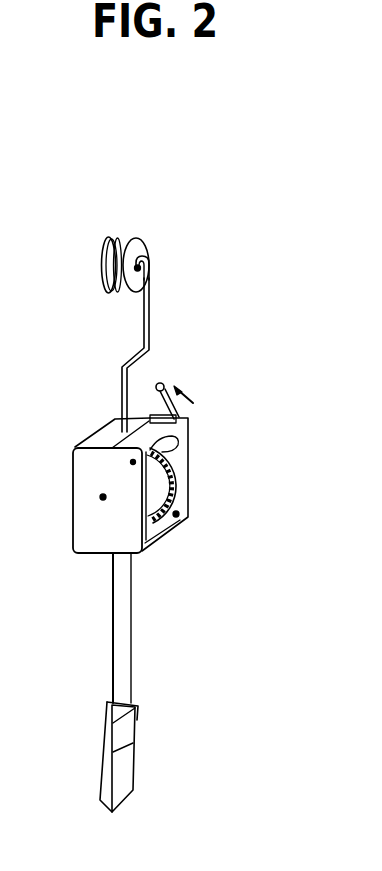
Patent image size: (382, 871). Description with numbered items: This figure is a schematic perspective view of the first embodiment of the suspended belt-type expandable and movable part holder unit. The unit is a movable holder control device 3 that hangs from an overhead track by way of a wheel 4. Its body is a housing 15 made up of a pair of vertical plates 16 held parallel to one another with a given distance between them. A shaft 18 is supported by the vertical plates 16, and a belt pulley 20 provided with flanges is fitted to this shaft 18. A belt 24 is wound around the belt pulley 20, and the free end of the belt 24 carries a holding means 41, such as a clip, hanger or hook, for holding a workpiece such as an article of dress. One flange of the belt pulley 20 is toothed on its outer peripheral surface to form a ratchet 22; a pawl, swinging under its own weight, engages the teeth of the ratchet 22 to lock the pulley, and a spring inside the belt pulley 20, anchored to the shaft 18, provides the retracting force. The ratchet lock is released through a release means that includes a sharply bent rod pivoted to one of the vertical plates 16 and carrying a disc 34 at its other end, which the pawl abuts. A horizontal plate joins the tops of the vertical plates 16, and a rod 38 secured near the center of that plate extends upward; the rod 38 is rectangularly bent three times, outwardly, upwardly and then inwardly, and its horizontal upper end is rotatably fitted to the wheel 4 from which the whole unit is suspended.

The movable holder control device 3 is at (72, 481).
The wheel 4 is at (147, 238).
The housing 15 is at (88, 437).
The vertical plates 16 is at (189, 512).
The shaft 18 is at (103, 497).
The belt pulley 20 is at (190, 468).
The ratchet 22 is at (180, 495).
The belt 24 is at (127, 648).
The disc 34 is at (163, 381).
The rod 38 is at (150, 317).
The holding means 41 is at (127, 777).